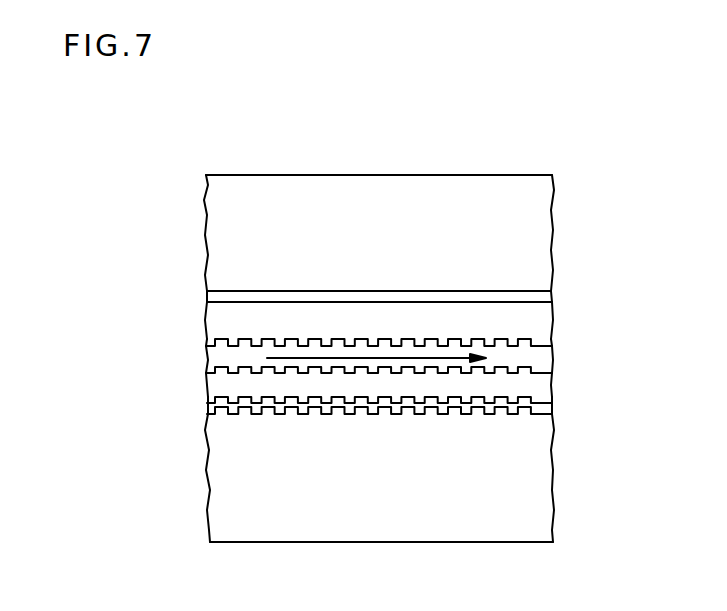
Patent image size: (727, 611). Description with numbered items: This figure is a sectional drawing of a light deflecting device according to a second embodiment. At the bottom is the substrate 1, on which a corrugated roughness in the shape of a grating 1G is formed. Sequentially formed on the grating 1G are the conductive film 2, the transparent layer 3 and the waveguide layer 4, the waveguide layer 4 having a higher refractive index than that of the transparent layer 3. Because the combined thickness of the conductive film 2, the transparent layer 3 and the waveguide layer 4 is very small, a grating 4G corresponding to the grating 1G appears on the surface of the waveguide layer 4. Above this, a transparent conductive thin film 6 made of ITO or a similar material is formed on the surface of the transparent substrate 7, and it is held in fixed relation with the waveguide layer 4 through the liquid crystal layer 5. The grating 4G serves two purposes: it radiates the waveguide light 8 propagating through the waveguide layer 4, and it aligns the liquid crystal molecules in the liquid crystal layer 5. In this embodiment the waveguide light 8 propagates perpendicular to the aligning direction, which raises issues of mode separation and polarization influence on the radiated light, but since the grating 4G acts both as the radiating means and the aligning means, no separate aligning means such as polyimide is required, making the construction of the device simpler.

The transparent substrate 7 is at (537, 227).
The transparent conductive thin film 6 is at (547, 295).
The liquid crystal layer 5 is at (545, 317).
The grating 4G is at (545, 340).
The waveguide layer 4 is at (540, 357).
The transparent layer 3 is at (542, 385).
The conductive film 2 is at (543, 403).
The grating 1G is at (524, 413).
The substrate 1 is at (535, 487).
The waveguide light 8 is at (327, 358).